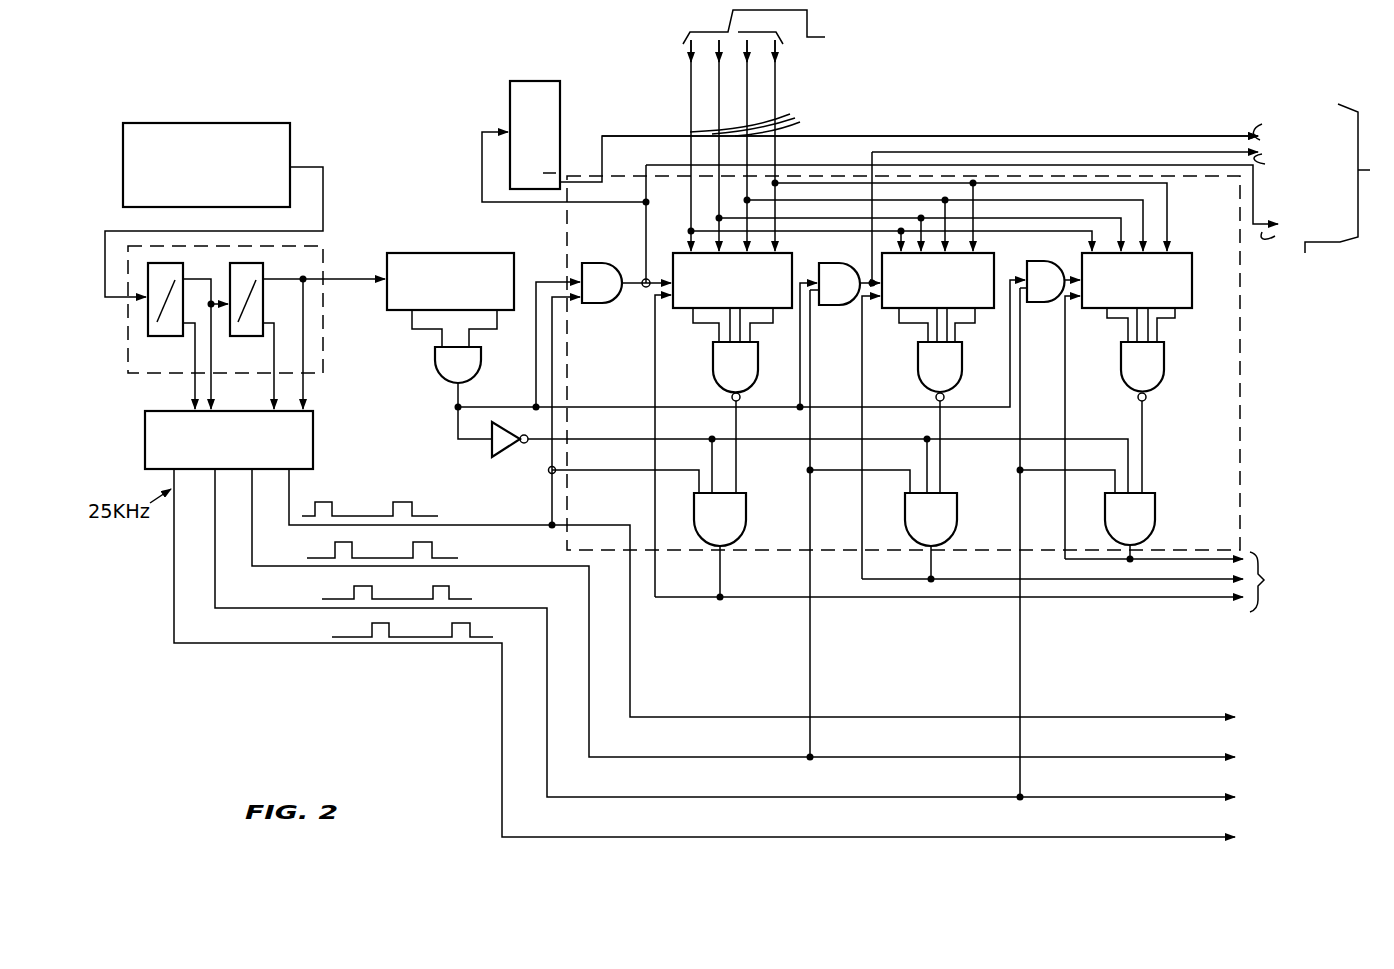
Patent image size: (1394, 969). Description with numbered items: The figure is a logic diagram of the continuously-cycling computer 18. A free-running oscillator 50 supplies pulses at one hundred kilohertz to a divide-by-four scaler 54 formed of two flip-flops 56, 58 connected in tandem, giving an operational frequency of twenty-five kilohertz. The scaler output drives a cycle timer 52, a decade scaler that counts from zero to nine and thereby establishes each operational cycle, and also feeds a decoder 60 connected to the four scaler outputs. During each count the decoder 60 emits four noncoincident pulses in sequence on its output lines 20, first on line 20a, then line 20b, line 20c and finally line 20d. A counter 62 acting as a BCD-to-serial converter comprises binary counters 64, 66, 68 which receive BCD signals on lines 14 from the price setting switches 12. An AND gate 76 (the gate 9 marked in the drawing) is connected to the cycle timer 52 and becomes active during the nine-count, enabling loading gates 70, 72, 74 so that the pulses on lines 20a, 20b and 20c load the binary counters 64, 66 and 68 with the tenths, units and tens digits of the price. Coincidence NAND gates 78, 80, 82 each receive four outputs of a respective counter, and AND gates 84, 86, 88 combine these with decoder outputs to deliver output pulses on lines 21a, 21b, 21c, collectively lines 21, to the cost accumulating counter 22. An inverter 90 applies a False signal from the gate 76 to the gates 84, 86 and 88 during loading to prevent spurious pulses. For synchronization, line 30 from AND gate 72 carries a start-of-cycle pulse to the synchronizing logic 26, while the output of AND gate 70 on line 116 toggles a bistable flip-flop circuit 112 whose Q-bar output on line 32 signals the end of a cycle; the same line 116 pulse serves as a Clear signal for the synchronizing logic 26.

The free-running oscillator 50 is at (125, 123).
The scaler 54 is at (323, 250).
The flip-flop 56 is at (148, 312).
The flip-flop 58 is at (263, 290).
The decoder 60 is at (313, 440).
The cycle timer 52 is at (466, 253).
The AND gate 76 is at (481, 363).
The gate 9 is at (440, 366).
The inverter 90 is at (514, 462).
The AND gate 70 is at (612, 305).
The AND gate 72 is at (850, 306).
The AND gate 74 is at (1052, 304).
The binary counter 64 is at (690, 310).
The binary counter 66 is at (898, 310).
The binary counter 68 is at (1100, 310).
The NAND gate 78 is at (758, 383).
The NAND gate 80 is at (962, 358).
The NAND gate 82 is at (1164, 358).
The AND gate 84 is at (746, 520).
The AND gate 86 is at (957, 520).
The AND gate 88 is at (1155, 520).
The bistable circuit 112 is at (564, 80).
The line 116 is at (646, 218).
The lines 14 is at (755, 145).
The price setting switches 12 is at (864, 39).
The output line 32 is at (865, 136).
The line 30 is at (1060, 152).
The synchronizing logic 26 is at (1311, 215).
The counter 62 is at (1240, 388).
The computer 18 is at (396, 653).
The line 20a is at (474, 527).
The line 20b is at (502, 567).
The line 20c is at (541, 611).
The line 20d is at (501, 655).
The output lines 20 is at (1128, 718).
The line 21a is at (782, 598).
The line 21b is at (1005, 580).
The line 21c is at (1188, 560).
The lines 21 is at (1226, 582).
The cost accumulating counter 22 is at (1310, 604).